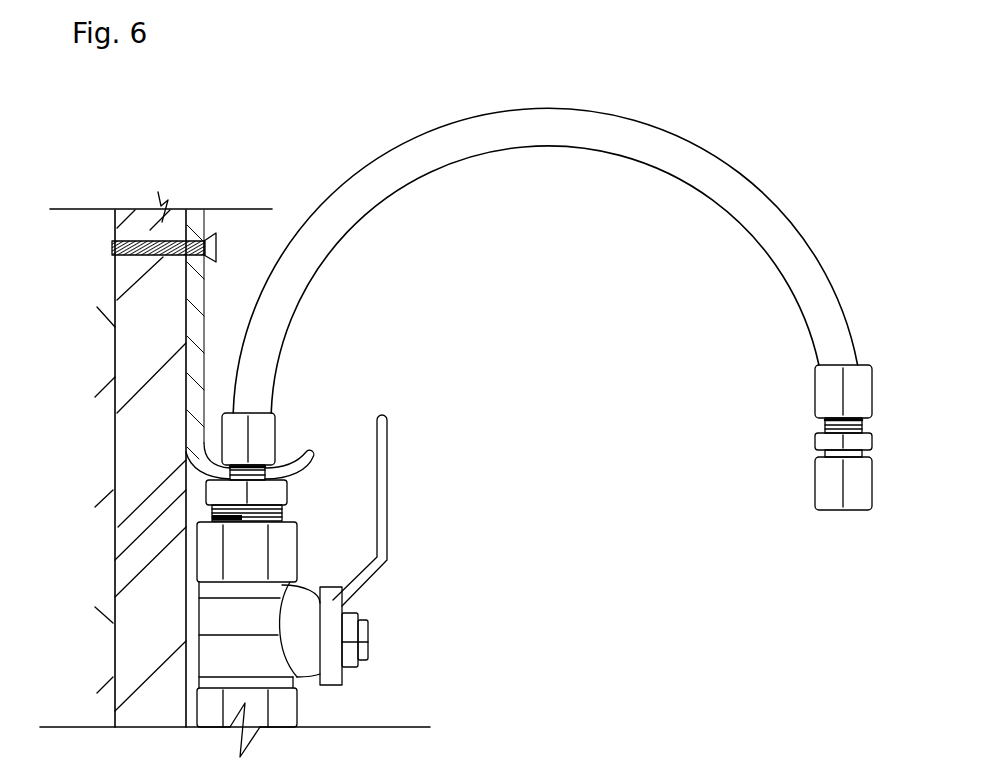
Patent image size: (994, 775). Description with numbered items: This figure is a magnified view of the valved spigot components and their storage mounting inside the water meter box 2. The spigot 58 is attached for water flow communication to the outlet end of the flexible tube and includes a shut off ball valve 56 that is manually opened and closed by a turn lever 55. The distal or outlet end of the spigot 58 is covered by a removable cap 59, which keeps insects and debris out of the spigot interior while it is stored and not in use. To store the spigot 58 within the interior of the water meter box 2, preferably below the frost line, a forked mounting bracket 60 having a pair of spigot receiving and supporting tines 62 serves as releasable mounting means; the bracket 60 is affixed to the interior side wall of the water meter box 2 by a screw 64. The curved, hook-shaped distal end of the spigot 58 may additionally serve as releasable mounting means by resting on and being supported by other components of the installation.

The water meter box 2 is at (133, 463).
The screw 64 is at (155, 240).
The forked mounting bracket 60 is at (200, 322).
The spigot receiving and supporting tines 62 is at (297, 462).
The spigot 58 is at (596, 118).
The removable cap 59 is at (827, 493).
The shut off ball valve 56 is at (233, 620).
The turn lever 55 is at (383, 510).